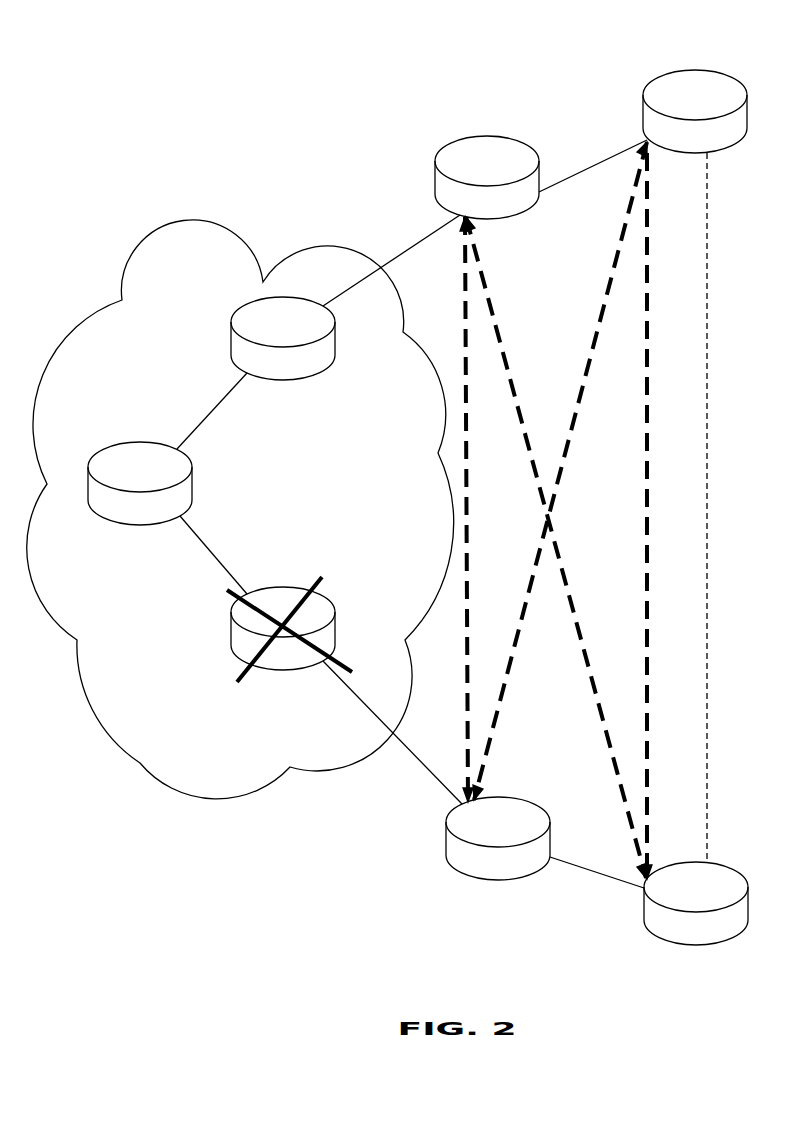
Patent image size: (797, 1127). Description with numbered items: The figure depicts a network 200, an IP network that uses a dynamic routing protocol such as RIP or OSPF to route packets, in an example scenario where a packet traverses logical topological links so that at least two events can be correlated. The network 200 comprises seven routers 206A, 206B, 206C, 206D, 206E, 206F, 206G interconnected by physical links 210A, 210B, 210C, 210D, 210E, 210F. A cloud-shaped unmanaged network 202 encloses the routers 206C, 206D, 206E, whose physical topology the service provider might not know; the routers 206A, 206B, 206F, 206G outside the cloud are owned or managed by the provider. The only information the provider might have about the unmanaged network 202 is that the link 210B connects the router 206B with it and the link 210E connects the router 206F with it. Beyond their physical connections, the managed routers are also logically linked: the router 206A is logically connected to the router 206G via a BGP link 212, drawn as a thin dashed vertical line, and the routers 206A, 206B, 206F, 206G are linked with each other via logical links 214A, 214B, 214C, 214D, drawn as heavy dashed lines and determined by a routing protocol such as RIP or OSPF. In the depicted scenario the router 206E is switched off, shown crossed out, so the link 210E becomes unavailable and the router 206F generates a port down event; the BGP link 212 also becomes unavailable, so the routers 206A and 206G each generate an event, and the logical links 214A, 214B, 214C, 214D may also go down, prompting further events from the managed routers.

The network 200 is at (339, 80).
The unmanaged network 202 is at (315, 536).
The router 206A is at (695, 83).
The router 206B is at (487, 151).
The router 206C is at (299, 352).
The router 206D is at (140, 508).
The router 206E is at (283, 654).
The router 206F is at (498, 864).
The router 206G is at (696, 929).
The physical link 210A is at (593, 158).
The physical link 210B is at (391, 256).
The physical link 210C is at (185, 410).
The physical link 210D is at (220, 554).
The physical link 210E is at (392, 742).
The physical link 210F is at (597, 892).
The BGP link 212 is at (722, 507).
The logical link 214A is at (477, 509).
The logical link 214B is at (498, 334).
The logical link 214C is at (573, 430).
The logical link 214D is at (659, 516).